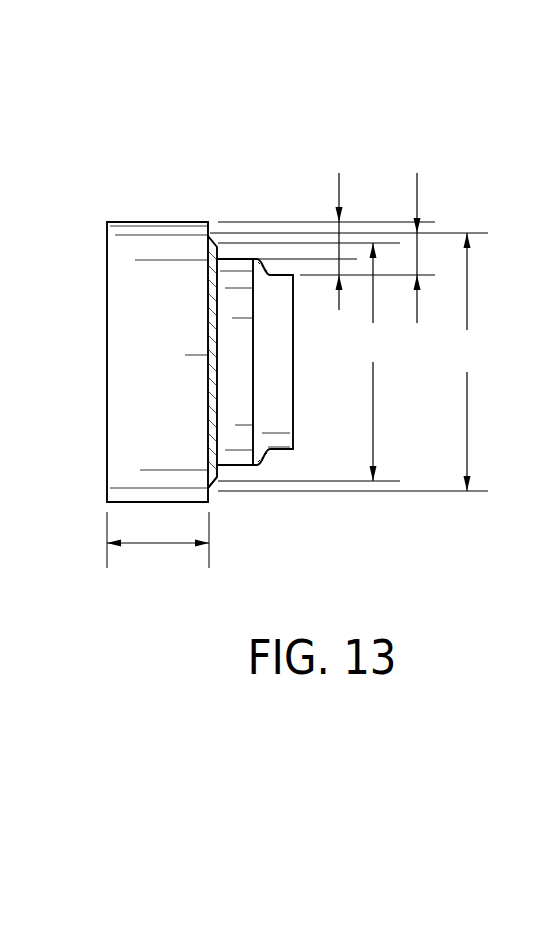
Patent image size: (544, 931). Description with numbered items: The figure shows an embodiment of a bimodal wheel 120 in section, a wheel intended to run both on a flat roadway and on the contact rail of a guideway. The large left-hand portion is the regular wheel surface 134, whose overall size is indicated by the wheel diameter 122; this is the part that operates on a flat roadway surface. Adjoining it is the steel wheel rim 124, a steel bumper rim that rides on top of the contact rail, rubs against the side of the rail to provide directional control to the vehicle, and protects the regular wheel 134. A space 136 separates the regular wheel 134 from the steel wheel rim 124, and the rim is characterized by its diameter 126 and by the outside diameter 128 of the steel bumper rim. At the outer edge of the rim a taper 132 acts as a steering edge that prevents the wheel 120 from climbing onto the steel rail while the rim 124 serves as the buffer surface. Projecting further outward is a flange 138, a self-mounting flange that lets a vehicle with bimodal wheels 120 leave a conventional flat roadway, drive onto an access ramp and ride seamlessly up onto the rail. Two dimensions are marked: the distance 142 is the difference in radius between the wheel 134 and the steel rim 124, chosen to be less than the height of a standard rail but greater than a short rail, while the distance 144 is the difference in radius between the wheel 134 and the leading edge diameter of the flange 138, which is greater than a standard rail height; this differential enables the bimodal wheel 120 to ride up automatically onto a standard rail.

The bimodal wheel 120 is at (204, 164).
The wheel diameter 122 is at (157, 543).
The steel wheel rim 124 is at (219, 238).
The steel bumper rim diameter 126 is at (309, 362).
The outside diameter of the steel bumper rim 128 is at (353, 362).
The taper 132 is at (217, 481).
The regular wheel surface 134 is at (132, 222).
The space 136 is at (210, 236).
The flange 138 is at (283, 278).
The distance 142 is at (339, 173).
The distance 144 is at (417, 185).